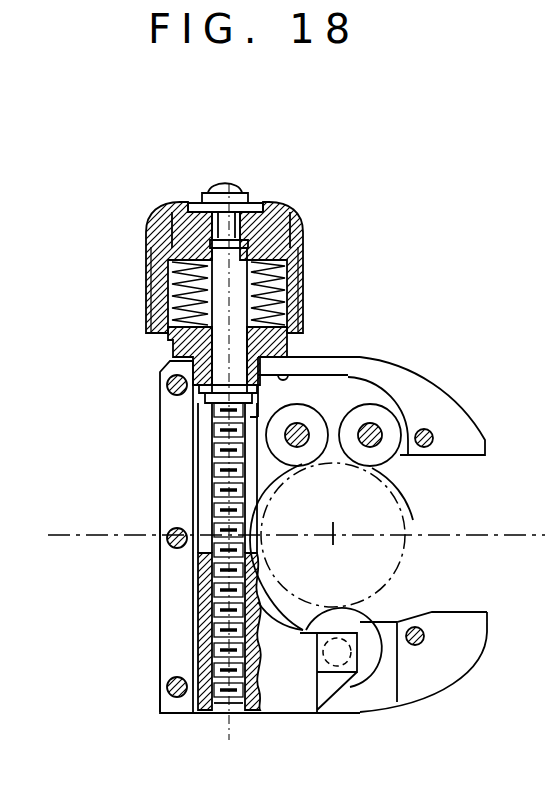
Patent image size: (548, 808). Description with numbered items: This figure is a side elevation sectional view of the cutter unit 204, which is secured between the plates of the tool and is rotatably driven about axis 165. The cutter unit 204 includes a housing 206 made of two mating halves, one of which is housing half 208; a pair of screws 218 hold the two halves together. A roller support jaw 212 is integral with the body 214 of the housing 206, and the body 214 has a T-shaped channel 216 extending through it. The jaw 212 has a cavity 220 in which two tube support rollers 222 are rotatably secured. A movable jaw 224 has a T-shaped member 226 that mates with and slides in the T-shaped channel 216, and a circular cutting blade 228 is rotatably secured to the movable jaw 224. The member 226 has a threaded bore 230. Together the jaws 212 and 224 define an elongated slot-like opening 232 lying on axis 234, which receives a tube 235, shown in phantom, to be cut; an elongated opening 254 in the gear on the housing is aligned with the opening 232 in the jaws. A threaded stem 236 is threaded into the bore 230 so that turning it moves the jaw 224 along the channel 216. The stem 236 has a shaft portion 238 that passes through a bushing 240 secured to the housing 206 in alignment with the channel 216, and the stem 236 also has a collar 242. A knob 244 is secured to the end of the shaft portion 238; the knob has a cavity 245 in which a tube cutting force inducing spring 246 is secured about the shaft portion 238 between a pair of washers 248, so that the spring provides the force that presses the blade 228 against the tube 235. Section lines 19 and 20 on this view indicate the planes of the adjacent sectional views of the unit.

The section line 19- 19 is at (333, 190).
The section line 20- 20 is at (69, 515).
The axis 165 is at (331, 541).
The cutter unit 204 is at (436, 344).
The housing 206 is at (140, 414).
The housing half 208 is at (170, 577).
The roller support jaw 212 is at (425, 400).
The body 214 is at (160, 663).
The T-shaped channel 216 is at (200, 425).
The screws 218 is at (168, 382).
The cavity 220 is at (307, 406).
The tube support rollers 222 is at (313, 408).
The movable jaw 224 is at (295, 716).
The T-shaped member 226 is at (195, 608).
The circular cutting blade 228 is at (353, 623).
The threaded bore 230 is at (240, 716).
The slot-like opening 232 is at (458, 513).
The axis 234 is at (450, 538).
The tube 235 is at (405, 510).
The threaded stem 236 is at (222, 462).
The shaft portion 238 is at (187, 273).
The bushing 240 is at (173, 348).
The collar 242 is at (187, 305).
The knob 244 is at (148, 247).
The cavity 245 is at (268, 270).
The tube cutting force inducing spring 246 is at (272, 292).
The washers 248 is at (173, 205).
The elongated opening 254 is at (388, 481).